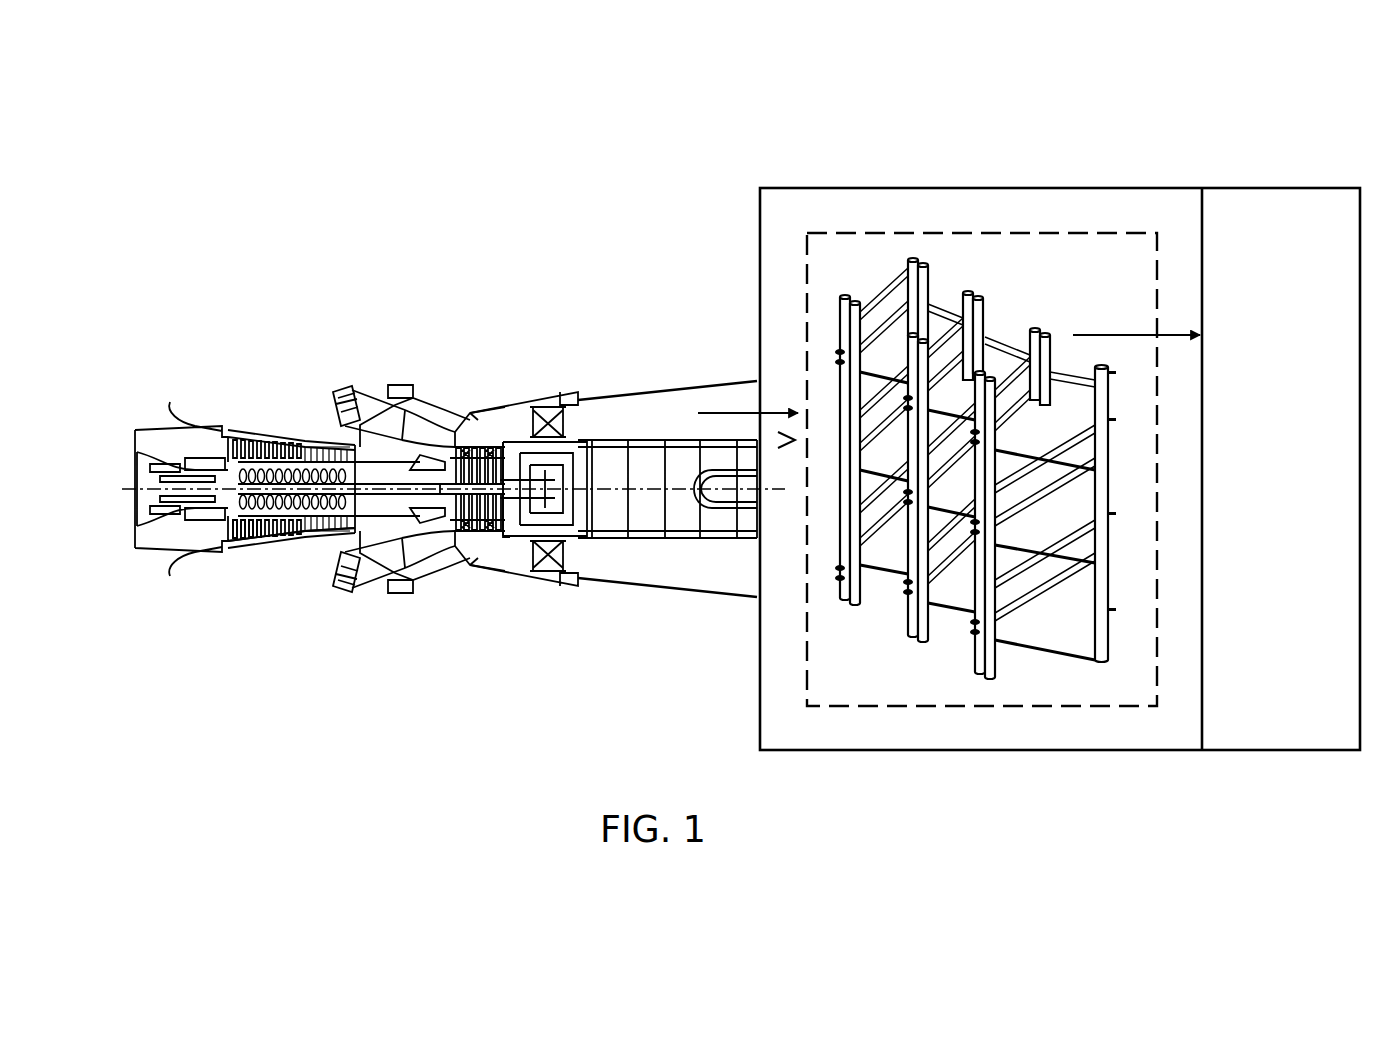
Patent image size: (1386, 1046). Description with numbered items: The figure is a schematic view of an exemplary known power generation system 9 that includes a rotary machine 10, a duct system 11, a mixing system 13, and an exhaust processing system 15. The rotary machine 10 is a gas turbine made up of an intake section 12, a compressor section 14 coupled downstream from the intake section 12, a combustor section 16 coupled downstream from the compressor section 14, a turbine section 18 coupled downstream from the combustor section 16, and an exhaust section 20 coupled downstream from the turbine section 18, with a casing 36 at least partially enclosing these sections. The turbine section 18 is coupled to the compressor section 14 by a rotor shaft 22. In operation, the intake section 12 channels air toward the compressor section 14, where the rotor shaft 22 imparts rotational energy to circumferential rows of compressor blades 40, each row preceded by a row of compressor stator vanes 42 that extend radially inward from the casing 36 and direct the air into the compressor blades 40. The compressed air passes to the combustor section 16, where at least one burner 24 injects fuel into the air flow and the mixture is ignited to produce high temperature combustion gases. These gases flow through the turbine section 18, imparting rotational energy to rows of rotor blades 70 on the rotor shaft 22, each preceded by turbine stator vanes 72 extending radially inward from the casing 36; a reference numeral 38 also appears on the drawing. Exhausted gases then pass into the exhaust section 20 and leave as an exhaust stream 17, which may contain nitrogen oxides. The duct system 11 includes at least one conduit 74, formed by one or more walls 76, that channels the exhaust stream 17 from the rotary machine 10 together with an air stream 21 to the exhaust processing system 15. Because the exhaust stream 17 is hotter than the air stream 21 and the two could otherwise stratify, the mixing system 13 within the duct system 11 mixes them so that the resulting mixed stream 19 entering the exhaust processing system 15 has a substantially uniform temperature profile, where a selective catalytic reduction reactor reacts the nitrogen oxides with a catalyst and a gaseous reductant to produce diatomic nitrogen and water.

The power generation system 9 is at (268, 311).
The rotary machine 10 is at (350, 355).
The intake section 12 is at (159, 406).
The compressor section 14 is at (268, 421).
The combustor section 16 is at (370, 378).
The turbine section 18 is at (482, 383).
The exhaust section 20 is at (640, 379).
The rotor shaft 22 is at (562, 442).
The burner 24 is at (377, 590).
The casing 36 is at (510, 410).
The diffuser outer wall 38 is at (505, 408).
The compressor blades 40 is at (258, 537).
The compressor stator vanes 42 is at (252, 547).
The rotor blades 70 is at (478, 418).
The turbine stator vanes 72 is at (460, 430).
The exhaust stream 17 is at (725, 412).
The air stream 21 is at (790, 218).
The duct system 11 is at (980, 188).
The mixing system 13 is at (890, 254).
The conduit 74 is at (1085, 188).
The mixed stream 19 is at (1120, 335).
The exhaust processing system 15 is at (1262, 188).
The wall 76 is at (923, 637).